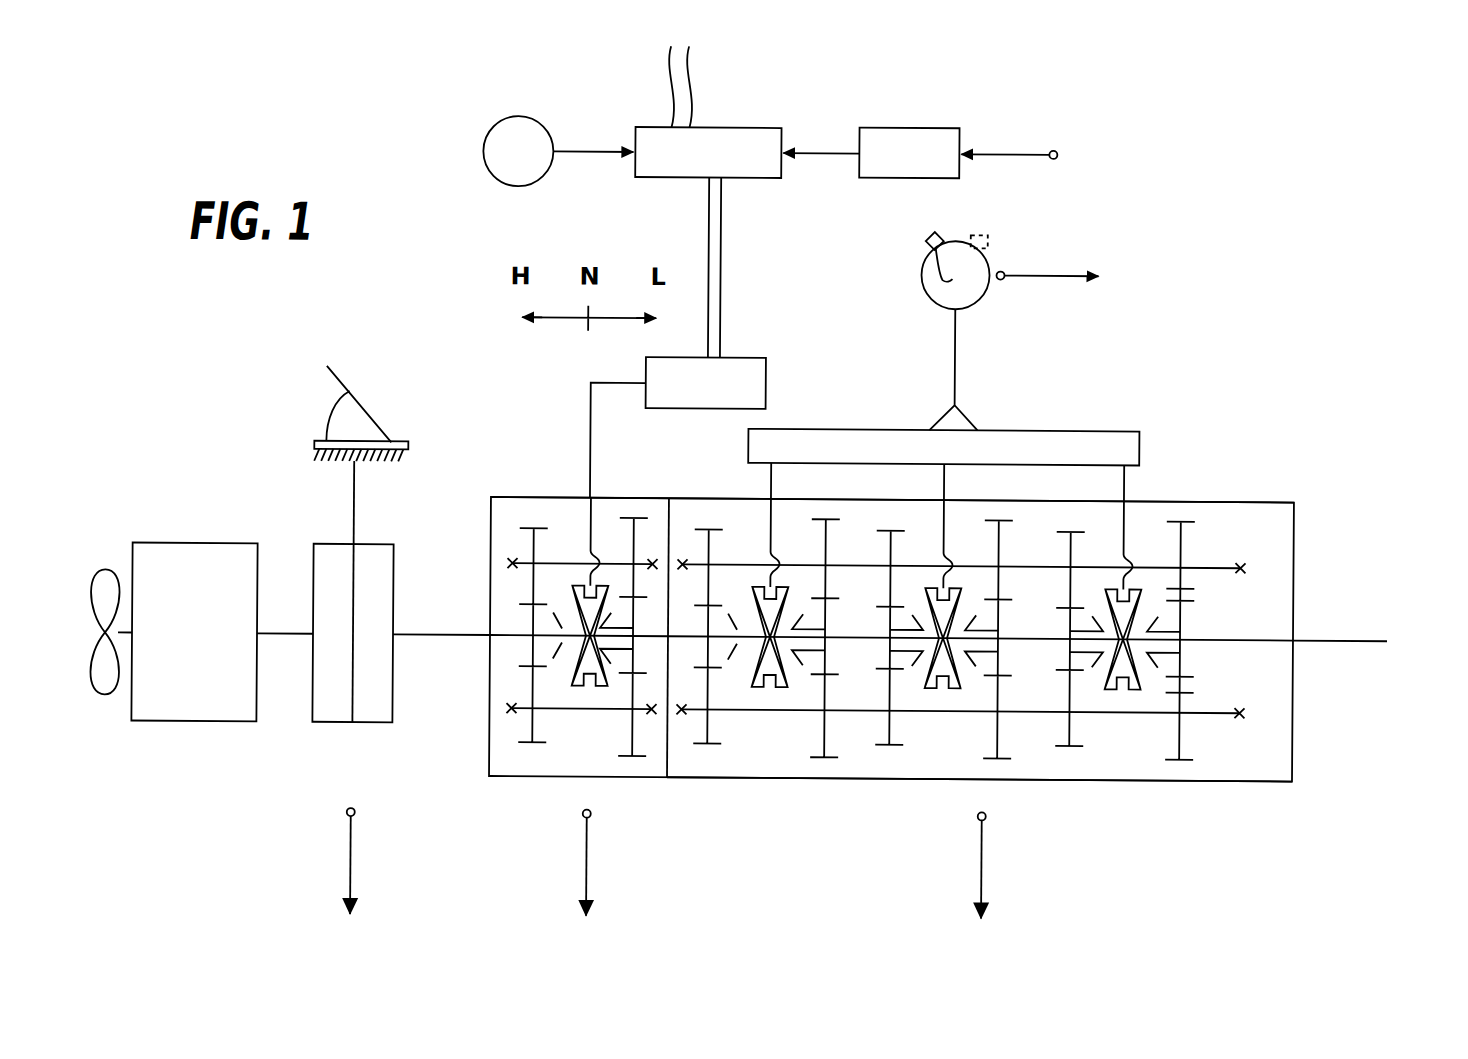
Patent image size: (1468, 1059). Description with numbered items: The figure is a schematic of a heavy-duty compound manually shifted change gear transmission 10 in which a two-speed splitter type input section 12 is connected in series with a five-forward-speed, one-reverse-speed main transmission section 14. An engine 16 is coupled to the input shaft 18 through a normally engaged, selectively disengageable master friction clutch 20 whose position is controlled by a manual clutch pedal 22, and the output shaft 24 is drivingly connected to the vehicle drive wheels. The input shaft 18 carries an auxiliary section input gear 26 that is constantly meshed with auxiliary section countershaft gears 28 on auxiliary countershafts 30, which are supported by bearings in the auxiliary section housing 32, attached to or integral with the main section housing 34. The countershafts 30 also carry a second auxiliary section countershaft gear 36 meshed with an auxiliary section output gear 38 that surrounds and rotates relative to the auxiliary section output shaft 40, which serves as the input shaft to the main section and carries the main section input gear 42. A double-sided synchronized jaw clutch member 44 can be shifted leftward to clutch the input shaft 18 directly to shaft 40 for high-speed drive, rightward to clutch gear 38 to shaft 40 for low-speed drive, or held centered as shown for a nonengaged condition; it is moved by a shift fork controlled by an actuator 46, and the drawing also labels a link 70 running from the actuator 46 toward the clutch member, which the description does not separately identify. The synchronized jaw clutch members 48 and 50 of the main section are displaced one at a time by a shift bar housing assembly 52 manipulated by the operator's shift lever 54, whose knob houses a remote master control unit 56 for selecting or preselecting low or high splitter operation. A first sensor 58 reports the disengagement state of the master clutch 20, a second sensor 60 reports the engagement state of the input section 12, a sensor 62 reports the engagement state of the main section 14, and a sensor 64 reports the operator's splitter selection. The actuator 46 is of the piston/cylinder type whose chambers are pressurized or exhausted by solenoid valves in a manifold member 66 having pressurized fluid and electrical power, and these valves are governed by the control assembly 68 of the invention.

The change gear transmission 10 is at (1285, 453).
The splitter type input section 12 is at (456, 773).
The main transmission section 14 is at (1345, 741).
The engine 16 is at (192, 732).
The input shaft 18 is at (447, 633).
The master friction clutch 20 is at (329, 757).
The clutch pedal 22 is at (355, 361).
The output shaft 24 is at (1340, 635).
The auxiliary section input gear 26 is at (527, 648).
The auxiliary section countershaft gears 28 is at (530, 545).
The auxiliary countershafts 30 is at (564, 558).
The auxiliary section housing 32 is at (607, 495).
The main section housing 34 is at (736, 495).
The second auxiliary section countershaft gear 36 is at (630, 732).
The auxiliary section output gear 38 is at (623, 663).
The auxiliary section output shaft 40 is at (681, 635).
The main section input gear 42 is at (712, 665).
The double-sided synchronized jaw clutch member 44 is at (587, 435).
The actuator 46 is at (746, 378).
The synchronized jaw clutch member 48 is at (945, 729).
The synchronized jaw clutch member 50 is at (1136, 727).
The shift bar housing assembly 52 is at (1050, 440).
The shift lever 54 is at (955, 341).
The remote master control unit 56 is at (987, 250).
The first sensor 58 is at (370, 883).
The second sensor 60 is at (620, 881).
The sensor 62 is at (1037, 896).
The sensor 64 is at (1043, 272).
The manifold member 66 is at (717, 147).
The control assembly 68 is at (903, 122).
The shift linkage 70 is at (621, 380).